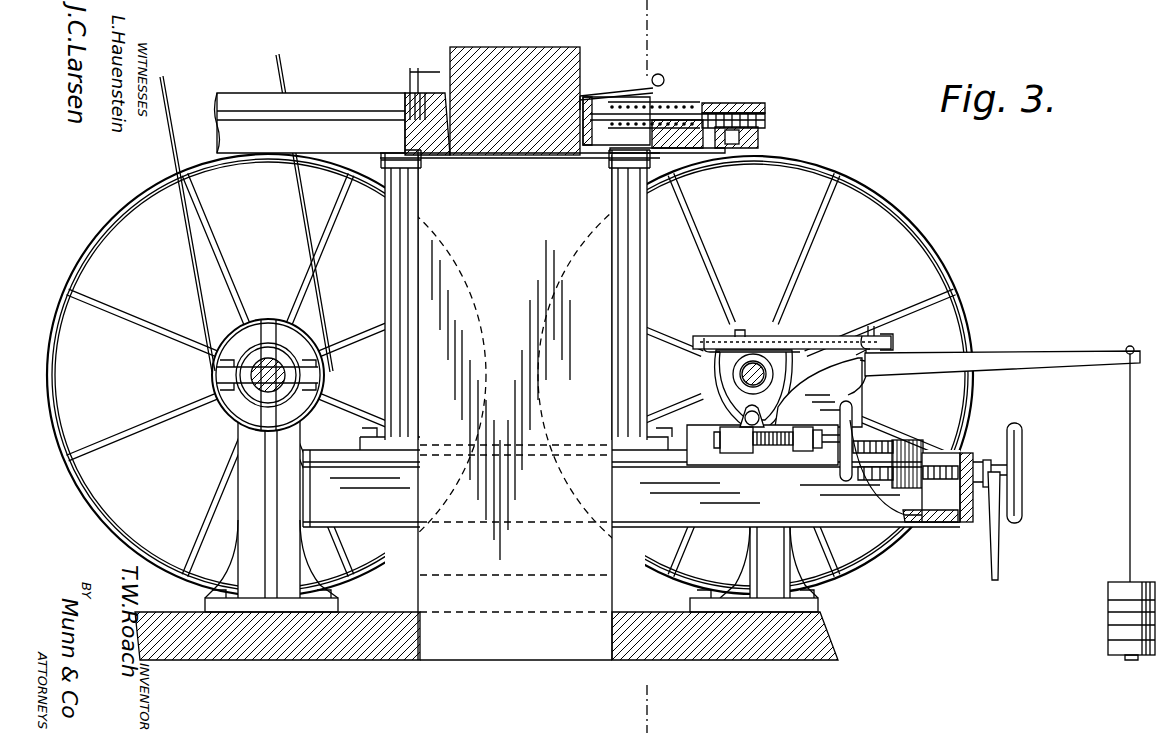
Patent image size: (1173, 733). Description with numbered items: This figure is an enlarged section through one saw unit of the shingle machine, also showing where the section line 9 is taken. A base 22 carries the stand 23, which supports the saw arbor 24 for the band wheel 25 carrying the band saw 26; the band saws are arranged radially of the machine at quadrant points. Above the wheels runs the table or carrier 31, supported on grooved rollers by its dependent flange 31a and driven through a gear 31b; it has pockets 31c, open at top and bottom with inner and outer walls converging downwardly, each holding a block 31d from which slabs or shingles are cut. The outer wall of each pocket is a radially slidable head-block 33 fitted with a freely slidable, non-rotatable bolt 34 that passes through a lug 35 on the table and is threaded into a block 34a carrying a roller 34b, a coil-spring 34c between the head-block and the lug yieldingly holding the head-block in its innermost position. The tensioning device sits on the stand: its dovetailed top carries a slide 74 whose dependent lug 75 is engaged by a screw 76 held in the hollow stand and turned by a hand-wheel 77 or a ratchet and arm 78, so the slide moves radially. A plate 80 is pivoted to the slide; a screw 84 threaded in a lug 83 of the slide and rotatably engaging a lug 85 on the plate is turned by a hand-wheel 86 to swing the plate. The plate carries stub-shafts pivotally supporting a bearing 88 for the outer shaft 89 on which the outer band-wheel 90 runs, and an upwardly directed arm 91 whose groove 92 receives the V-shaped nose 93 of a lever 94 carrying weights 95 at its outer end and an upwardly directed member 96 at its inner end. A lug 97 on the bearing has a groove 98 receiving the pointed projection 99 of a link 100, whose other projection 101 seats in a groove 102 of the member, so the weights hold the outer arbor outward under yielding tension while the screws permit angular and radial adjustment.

The section line 9— 9 is at (662, 32).
The base 22 is at (318, 660).
The stand 23 is at (245, 560).
The saw arbor 24 is at (246, 398).
The band wheel 25 is at (152, 555).
The band saw 26 is at (634, 598).
The table or carrier 31 is at (305, 100).
The dependent flange 31a is at (650, 158).
The gear 31b is at (680, 150).
The pocket 31c is at (412, 92).
The block 31d is at (515, 50).
The head-block 33 is at (600, 95).
The bolt 34 is at (720, 102).
The block 34a is at (758, 104).
The roller 34b is at (758, 133).
The coil-spring 34c is at (695, 100).
The lug 35 is at (715, 112).
The slide 74 is at (915, 450).
The dependent lug 75 is at (912, 487).
The screw 76 is at (940, 479).
The hand-wheel 77 is at (1022, 457).
The ratchet and arm 78 is at (998, 550).
The plate 80 is at (700, 427).
The lug 83 is at (735, 453).
The screw 84 is at (772, 445).
The lug 85 is at (805, 451).
The hand-wheel 86 is at (845, 481).
The bearing 88 is at (715, 386).
The outer shaft 89 is at (718, 366).
The outer band-wheel 90 is at (935, 255).
The arm 91 is at (862, 392).
The groove 92 is at (856, 358).
The V-shaped nose 93 is at (858, 365).
The lever 94 is at (995, 364).
The weights 95 is at (1108, 622).
The upwardly directed member 96 is at (871, 326).
The lug 97 is at (740, 330).
The groove 98 is at (746, 362).
The pointed projection 99 is at (708, 340).
The link 100 is at (792, 336).
The projection 101 is at (893, 342).
The groove 102 is at (862, 336).